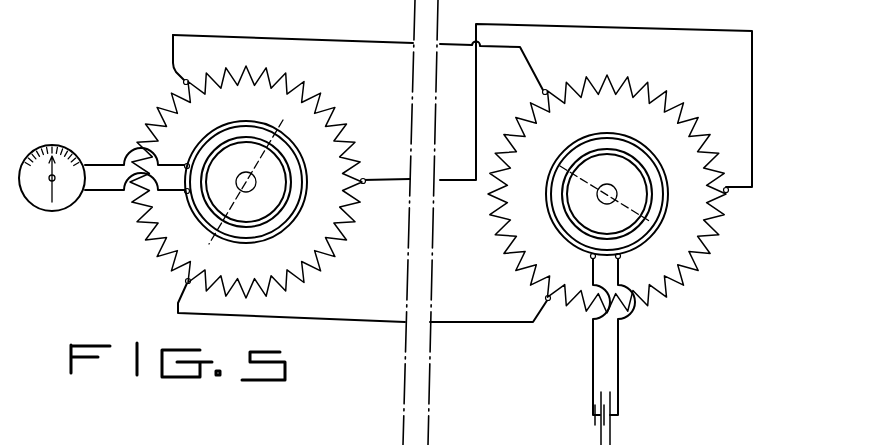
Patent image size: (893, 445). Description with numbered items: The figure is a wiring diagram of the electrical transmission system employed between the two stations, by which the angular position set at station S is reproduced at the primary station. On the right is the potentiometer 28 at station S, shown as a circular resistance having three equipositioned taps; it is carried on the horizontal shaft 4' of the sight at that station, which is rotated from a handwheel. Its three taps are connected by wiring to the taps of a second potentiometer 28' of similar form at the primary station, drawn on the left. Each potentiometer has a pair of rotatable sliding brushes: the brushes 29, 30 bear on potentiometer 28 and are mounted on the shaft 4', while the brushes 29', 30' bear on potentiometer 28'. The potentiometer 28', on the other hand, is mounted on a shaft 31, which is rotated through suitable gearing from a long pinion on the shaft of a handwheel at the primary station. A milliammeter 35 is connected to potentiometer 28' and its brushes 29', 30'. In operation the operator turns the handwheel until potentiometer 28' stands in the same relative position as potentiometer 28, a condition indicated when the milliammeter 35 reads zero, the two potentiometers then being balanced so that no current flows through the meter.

The milliammeter 35 is at (84, 160).
The second potentiometer 28′ is at (313, 122).
The rotatable sliding brush 29′ is at (288, 118).
The rotatable sliding brush 30′ is at (225, 221).
The shaft 31 is at (250, 181).
The potentiometer 28 is at (647, 120).
The rotatable sliding brush 29 is at (556, 157).
The rotatable sliding brush 30 is at (646, 228).
The horizontal shaft 4′ is at (620, 170).